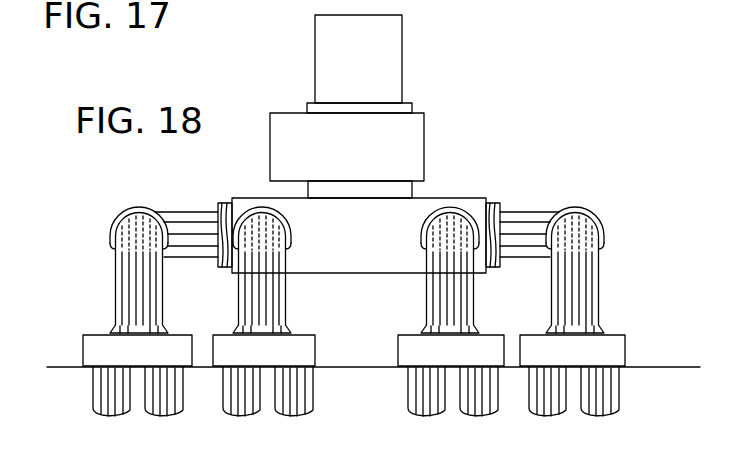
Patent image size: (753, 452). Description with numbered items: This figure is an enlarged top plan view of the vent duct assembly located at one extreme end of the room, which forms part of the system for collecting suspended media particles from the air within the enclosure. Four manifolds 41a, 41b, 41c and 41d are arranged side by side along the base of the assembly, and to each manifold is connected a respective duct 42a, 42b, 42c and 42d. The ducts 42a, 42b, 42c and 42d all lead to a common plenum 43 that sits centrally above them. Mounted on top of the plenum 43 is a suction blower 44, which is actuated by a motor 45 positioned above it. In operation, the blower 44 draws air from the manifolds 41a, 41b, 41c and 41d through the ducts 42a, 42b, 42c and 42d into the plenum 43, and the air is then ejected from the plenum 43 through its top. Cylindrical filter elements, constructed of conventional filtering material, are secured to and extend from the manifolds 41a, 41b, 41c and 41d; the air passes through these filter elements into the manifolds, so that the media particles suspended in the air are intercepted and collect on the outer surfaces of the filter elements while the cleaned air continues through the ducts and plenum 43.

The manifold 41a is at (83, 352).
The manifold 41b is at (316, 346).
The manifold 41c is at (398, 345).
The manifold 41d is at (627, 345).
The duct 42a is at (214, 274).
The duct 42b is at (285, 313).
The duct 42c is at (423, 306).
The duct 42d is at (528, 292).
The plenum 43 is at (420, 208).
The suction blower 44 is at (417, 150).
The motor 45 is at (392, 63).